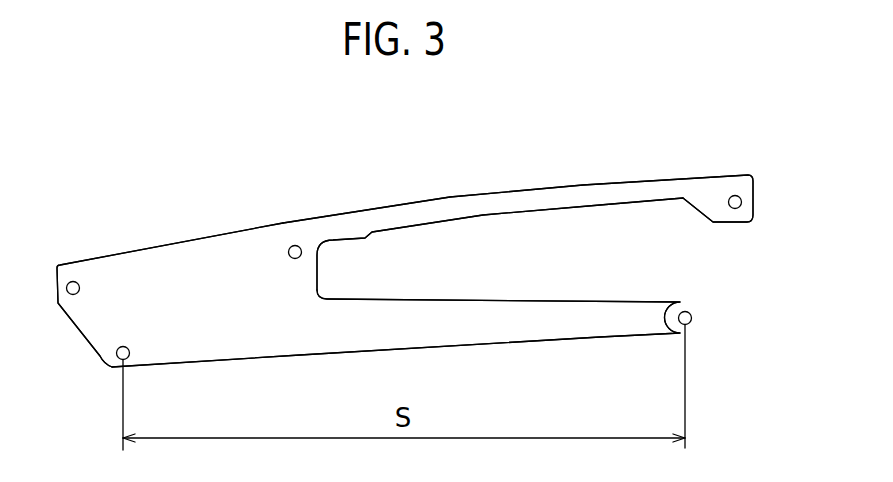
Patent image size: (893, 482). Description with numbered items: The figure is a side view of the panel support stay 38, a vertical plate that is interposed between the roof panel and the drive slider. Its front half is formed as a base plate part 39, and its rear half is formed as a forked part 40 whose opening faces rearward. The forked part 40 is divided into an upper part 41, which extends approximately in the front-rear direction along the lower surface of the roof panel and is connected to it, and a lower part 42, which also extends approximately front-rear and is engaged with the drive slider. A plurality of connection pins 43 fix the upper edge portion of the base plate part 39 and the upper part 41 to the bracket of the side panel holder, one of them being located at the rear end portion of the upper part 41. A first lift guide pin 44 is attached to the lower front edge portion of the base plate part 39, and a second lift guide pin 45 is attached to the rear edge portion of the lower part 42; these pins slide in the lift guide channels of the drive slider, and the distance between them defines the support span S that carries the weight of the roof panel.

The panel support stay 38 is at (122, 225).
The base plate part 39 is at (195, 273).
The forked part 40 is at (453, 188).
The upper part 41 is at (586, 198).
The lower part 42 is at (523, 328).
The connection pins 43 is at (73, 281).
The first lift guide pin 44 is at (107, 357).
The second lift guide pin 45 is at (692, 320).